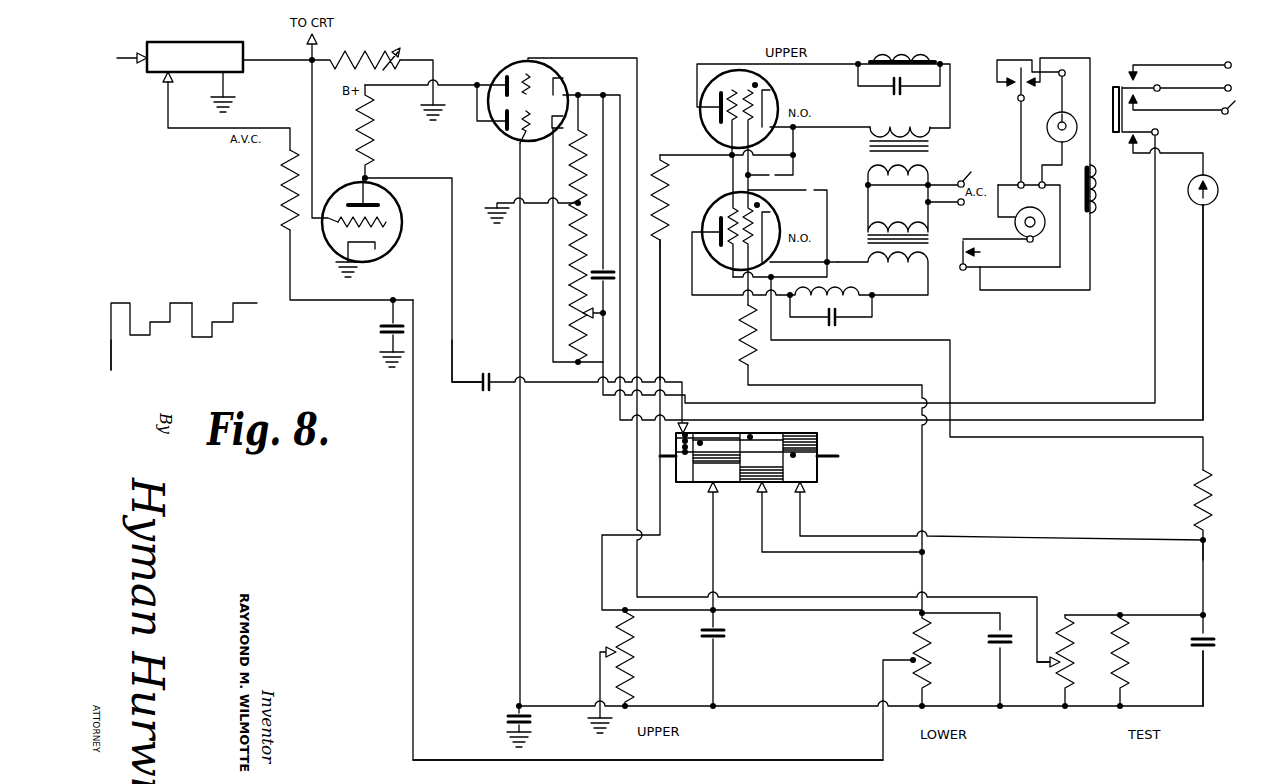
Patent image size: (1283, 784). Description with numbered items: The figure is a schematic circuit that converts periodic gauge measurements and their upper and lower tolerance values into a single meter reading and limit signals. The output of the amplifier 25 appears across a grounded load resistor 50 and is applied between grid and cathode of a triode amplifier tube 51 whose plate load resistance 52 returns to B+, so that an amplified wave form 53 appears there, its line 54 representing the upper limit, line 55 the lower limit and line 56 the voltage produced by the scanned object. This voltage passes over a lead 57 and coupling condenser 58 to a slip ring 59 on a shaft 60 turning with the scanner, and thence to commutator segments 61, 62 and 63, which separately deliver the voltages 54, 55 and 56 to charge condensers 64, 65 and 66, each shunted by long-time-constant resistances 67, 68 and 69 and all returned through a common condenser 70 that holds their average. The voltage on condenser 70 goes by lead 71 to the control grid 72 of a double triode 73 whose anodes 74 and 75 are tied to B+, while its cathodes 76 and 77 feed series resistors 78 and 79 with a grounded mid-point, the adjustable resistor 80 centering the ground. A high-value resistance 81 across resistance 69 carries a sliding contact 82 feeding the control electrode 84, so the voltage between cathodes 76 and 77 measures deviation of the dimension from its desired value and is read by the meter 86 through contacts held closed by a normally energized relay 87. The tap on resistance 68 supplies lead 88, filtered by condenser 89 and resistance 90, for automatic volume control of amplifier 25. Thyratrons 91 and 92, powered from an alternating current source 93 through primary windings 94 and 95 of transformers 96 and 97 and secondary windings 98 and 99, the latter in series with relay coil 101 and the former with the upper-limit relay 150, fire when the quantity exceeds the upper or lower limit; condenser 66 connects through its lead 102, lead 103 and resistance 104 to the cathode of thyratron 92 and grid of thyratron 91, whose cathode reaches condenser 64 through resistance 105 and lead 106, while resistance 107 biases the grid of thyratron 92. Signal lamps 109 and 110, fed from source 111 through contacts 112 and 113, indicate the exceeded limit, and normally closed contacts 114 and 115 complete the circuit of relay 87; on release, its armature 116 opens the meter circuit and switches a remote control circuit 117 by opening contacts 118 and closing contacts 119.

The amplifier 25 is at (178, 74).
The load resistor 50 is at (368, 48).
The triode amplifier tube 51 is at (393, 249).
The load resistance 52 is at (378, 107).
The voltage wave form 53 is at (336, 223).
The upper limit line 54 is at (126, 303).
The lower limit line 55 is at (129, 346).
The measured voltage line 56 is at (155, 332).
The lead 57 is at (462, 384).
The coupling condenser 58 is at (487, 370).
The slip ring 59 is at (683, 484).
The shaft 60 is at (830, 452).
The commutator segment 61 is at (710, 433).
The commutator segment 62 is at (765, 433).
The commutator segment 63 is at (805, 433).
The condenser 64 is at (726, 632).
The condenser 65 is at (988, 642).
The condenser 66 is at (1212, 640).
The resistance 67 is at (612, 645).
The resistance 68 is at (914, 640).
The resistance 69 is at (1130, 660).
The condenser 70 is at (505, 714).
The lead 71 is at (514, 608).
The control grid 72 is at (518, 140).
The double triode electronic amplifier tube 73 is at (530, 63).
The anode 74 is at (504, 124).
The anode 75 is at (506, 76).
The cathode 76 is at (566, 122).
The cathode 77 is at (566, 84).
The resistor 78 is at (570, 240).
The resistor 79 is at (570, 160).
The adjustable resistor 80 is at (570, 322).
The resistance 81 is at (1075, 648).
The sliding contact 82 is at (1045, 672).
The control electrode 84 is at (520, 62).
The voltage measuring instrument 86 is at (1158, 135).
The relay 87 is at (1102, 190).
The lead 88 is at (412, 462).
The filtering condenser 89 is at (380, 329).
The filtering resistance 90 is at (283, 190).
The thyratron 91 is at (778, 90).
The thyratron 92 is at (780, 218).
The alternating current source 93 is at (978, 170).
The primary winding 94 is at (868, 178).
The primary winding 95 is at (882, 212).
The transformer 96 is at (916, 147).
The transformer 97 is at (884, 240).
The secondary winding 98 is at (900, 120).
The secondary winding 99 is at (890, 270).
The relay coil 101 is at (838, 288).
The lead 102 is at (1205, 675).
The lead 103 is at (1208, 540).
The resistance 104 is at (1192, 505).
The resistance 105 is at (672, 195).
The lead 106 is at (663, 345).
The resistance 107 is at (757, 352).
The signal lamp 109 is at (1058, 140).
The signal lamp 110 is at (1014, 230).
The alternating potential source 111 is at (1045, 214).
The normally open contacts 112 is at (1008, 87).
The normally open contacts 113 is at (962, 268).
The normally closed contacts 114 is at (1026, 88).
The normally closed contacts 115 is at (980, 252).
The armature 116 is at (1118, 134).
The remote control circuit 117 is at (1203, 102).
The contacts 118 is at (1140, 100).
The contacts 119 is at (1140, 74).
The relay 150 is at (915, 58).